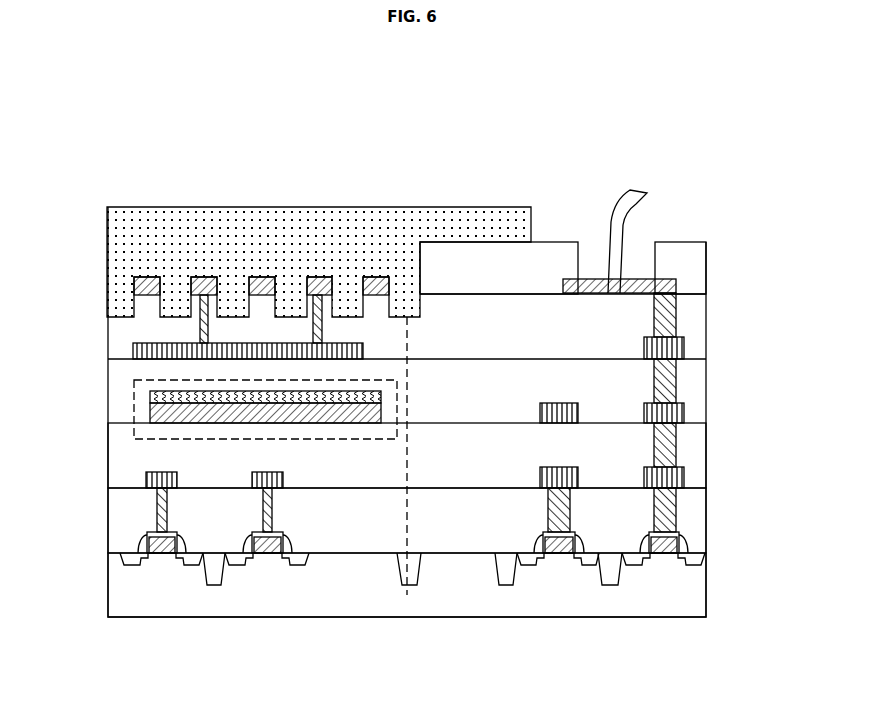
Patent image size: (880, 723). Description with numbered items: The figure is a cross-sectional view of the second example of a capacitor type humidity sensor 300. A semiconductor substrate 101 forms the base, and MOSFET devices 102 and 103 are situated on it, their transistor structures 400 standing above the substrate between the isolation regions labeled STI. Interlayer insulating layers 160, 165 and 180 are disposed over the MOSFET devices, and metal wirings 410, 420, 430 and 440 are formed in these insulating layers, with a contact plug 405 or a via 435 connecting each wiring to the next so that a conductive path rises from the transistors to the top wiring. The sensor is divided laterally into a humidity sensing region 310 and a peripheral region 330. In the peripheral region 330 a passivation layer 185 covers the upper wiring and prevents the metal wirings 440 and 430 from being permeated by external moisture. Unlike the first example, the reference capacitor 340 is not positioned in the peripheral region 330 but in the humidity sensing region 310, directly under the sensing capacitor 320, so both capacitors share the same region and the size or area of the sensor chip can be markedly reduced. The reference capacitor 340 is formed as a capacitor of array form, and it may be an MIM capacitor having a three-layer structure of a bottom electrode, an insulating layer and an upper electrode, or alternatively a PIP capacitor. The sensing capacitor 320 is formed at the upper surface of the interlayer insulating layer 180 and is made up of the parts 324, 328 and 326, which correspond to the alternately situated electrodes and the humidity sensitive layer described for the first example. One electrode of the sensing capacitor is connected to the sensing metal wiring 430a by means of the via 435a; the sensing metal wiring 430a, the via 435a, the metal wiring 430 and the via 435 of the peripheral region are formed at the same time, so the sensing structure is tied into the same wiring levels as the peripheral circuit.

The semiconductor device 300 is at (393, 83).
The humidity sensing region 310 is at (256, 146).
The sensing capacitor 320 is at (212, 144).
The lower electrode 324 is at (140, 277).
The dielectric layer 328 is at (168, 236).
The upper electrode 326 is at (202, 277).
The peripheral region 330 is at (593, 144).
The interlayer insulating layer 180 is at (485, 332).
The passivation layer 185 is at (546, 278).
The metal wiring 440 is at (678, 284).
The via 435 is at (676, 313).
The metal wiring 430 is at (674, 347).
The via 435a is at (202, 322).
The sensing metal wiring 430a is at (138, 351).
The reference capacitor 340 is at (140, 397).
The metal wiring 420 is at (674, 412).
The interlayer insulating layer 165 is at (128, 458).
The metal wiring 410 is at (674, 477).
The contact plug 405 is at (674, 503).
The interlayer insulating layer 160 is at (126, 523).
The gate electrode 400 is at (675, 541).
The semiconductor substrate 101 is at (673, 588).
The MOSFET device 102 is at (557, 553).
The MOSFET device 103 is at (166, 553).
The shallow trench isolation STI is at (612, 585).